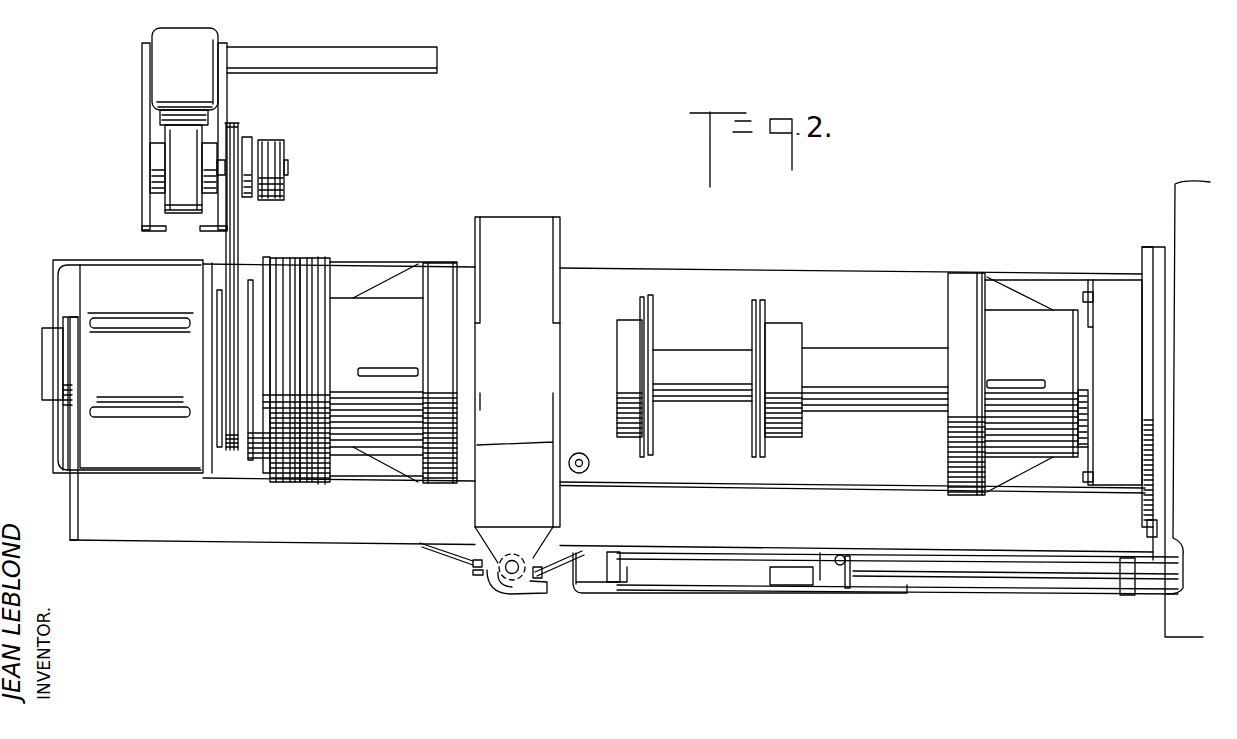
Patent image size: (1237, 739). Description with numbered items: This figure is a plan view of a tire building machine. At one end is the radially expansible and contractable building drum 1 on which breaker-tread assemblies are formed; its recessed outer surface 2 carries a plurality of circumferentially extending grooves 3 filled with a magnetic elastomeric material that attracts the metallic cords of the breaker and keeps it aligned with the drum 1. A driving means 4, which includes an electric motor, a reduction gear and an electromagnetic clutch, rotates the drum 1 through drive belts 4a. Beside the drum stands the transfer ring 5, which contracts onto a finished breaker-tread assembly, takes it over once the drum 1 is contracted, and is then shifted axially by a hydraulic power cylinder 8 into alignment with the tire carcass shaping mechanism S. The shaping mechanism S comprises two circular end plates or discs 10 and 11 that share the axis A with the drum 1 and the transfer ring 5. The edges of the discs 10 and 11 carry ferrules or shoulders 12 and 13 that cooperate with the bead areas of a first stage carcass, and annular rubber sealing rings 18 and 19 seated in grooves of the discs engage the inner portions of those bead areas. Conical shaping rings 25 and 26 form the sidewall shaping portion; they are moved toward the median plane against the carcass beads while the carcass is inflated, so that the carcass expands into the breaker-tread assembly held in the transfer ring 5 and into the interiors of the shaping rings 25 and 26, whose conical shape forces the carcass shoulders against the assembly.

The building drum 1 is at (329, 262).
The grooved outer surface 2 is at (313, 481).
The circumferentially extending grooves 3 is at (296, 481).
The driving means 4 is at (228, 96).
The drive belts 4a is at (240, 229).
The transfer ring 5 is at (538, 215).
The hydraulic power cylinder 8 is at (1022, 578).
The end plate or disc 10 is at (766, 444).
The end plate or disc 11 is at (642, 309).
The ferrule or shoulder 12 is at (752, 306).
The ferrule or shoulder 13 is at (652, 304).
The annular sealing ring 18 is at (764, 306).
The annular sealing ring 19 is at (641, 299).
The conical shaping ring 25 is at (974, 272).
The conical shaping ring 26 is at (437, 487).
The tire carcass shaping mechanism S is at (845, 258).
The axis A is at (40, 366).